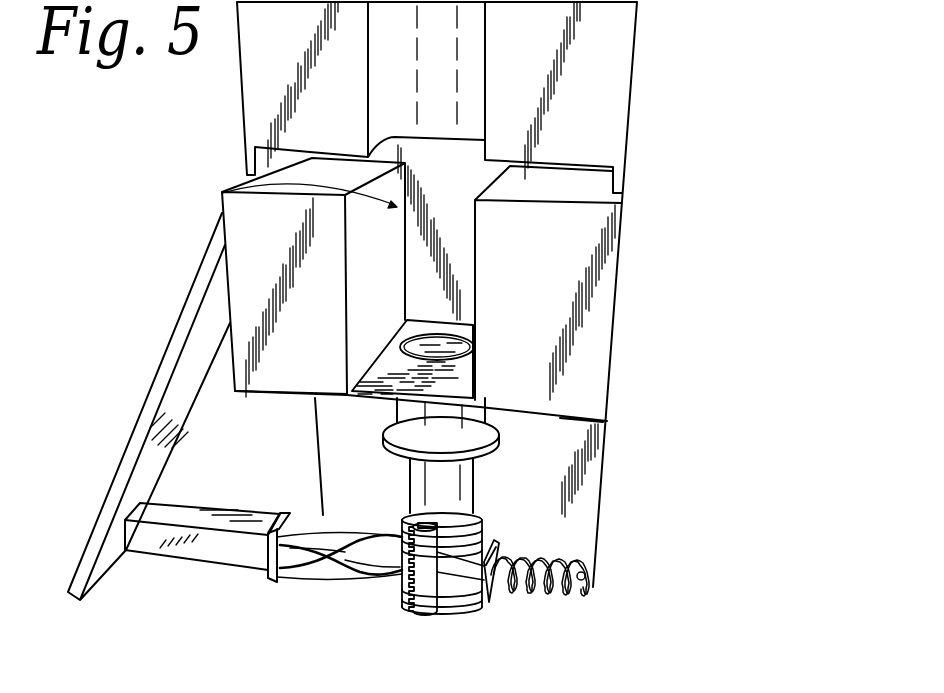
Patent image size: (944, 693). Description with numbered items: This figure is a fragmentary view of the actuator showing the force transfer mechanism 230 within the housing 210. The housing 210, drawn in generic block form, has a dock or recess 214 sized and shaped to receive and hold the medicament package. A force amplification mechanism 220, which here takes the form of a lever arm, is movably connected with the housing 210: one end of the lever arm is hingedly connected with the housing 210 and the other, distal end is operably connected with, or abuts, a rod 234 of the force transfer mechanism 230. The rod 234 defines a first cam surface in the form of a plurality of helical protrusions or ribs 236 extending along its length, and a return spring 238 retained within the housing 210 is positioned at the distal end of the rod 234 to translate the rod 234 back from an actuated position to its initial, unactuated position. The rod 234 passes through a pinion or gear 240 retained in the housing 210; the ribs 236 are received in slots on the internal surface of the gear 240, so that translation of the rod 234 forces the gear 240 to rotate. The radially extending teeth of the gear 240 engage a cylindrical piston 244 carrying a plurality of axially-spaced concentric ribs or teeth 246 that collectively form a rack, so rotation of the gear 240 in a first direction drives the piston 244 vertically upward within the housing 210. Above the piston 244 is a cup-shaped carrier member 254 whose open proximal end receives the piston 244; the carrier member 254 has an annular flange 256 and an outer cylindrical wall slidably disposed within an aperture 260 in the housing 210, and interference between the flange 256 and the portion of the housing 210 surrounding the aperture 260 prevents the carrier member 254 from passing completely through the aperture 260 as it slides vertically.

The housing 210 is at (350, 98).
The dock or recess 214 is at (222, 192).
The force amplification mechanism 220 is at (156, 393).
The force transfer mechanism 230 is at (482, 480).
The rod 234 is at (177, 508).
The helical protrusions or ribs 236 is at (322, 527).
The return spring 238 is at (542, 568).
The pinion or gear 240 is at (420, 524).
The piston 244 is at (456, 508).
The concentric ribs or teeth 246 is at (480, 520).
The carrier member 254 is at (435, 353).
The annular flange 256 is at (487, 436).
The aperture 260 is at (408, 356).